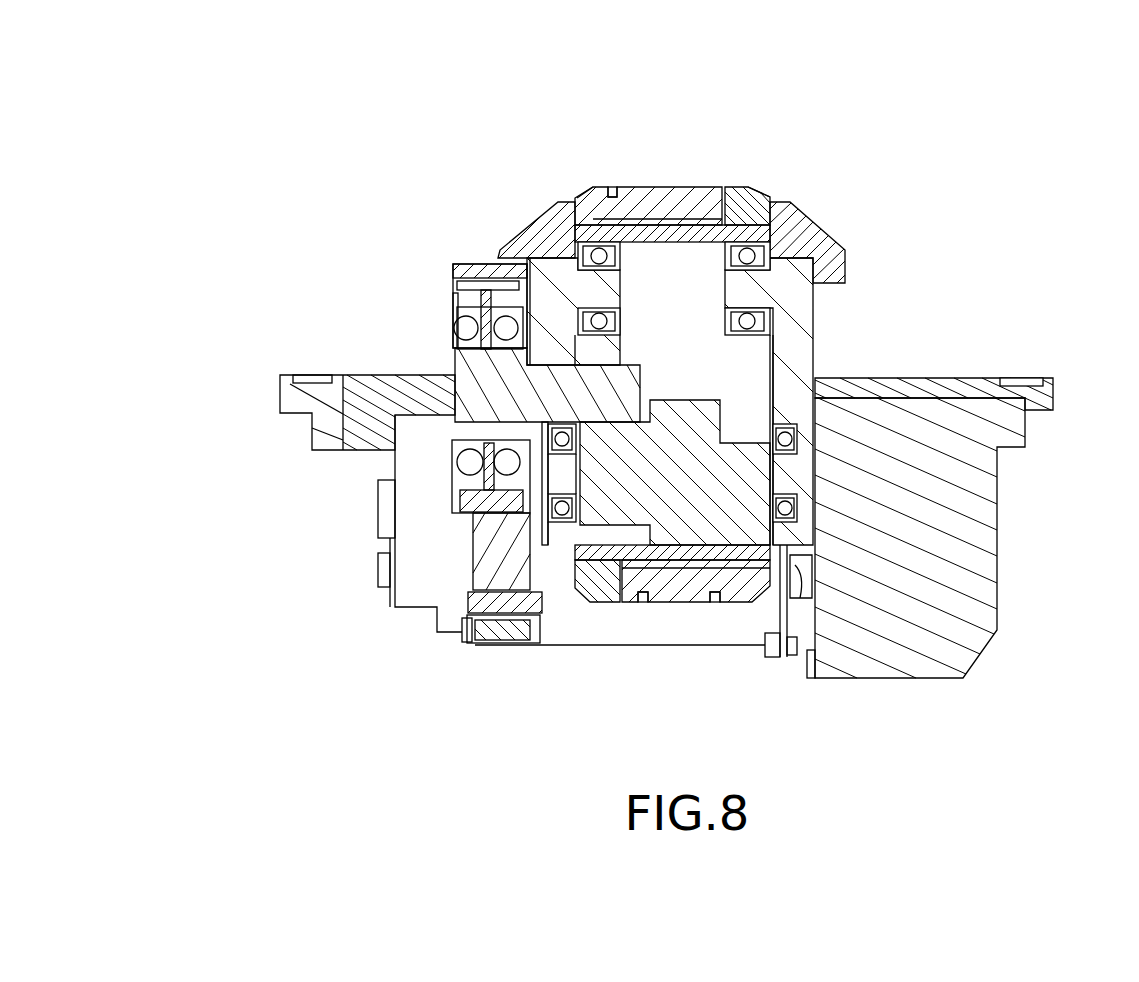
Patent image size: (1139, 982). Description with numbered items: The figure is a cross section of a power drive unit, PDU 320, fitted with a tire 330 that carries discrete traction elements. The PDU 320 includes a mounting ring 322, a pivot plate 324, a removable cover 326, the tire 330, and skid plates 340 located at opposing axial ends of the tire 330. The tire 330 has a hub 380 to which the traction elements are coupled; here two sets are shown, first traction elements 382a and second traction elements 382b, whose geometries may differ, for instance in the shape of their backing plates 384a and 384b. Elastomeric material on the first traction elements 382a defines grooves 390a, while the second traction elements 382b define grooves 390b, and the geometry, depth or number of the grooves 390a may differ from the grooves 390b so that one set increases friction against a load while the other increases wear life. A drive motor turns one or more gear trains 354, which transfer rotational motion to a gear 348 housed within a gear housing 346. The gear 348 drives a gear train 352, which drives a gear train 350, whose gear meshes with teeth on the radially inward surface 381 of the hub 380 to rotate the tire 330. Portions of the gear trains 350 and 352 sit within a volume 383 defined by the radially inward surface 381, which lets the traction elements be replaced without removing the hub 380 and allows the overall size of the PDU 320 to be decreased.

The PDU 320 is at (282, 176).
The mounting ring 322 is at (964, 498).
The pivot plate 324 is at (1010, 378).
The removable cover 326 is at (906, 378).
The tire 330 is at (677, 122).
The skid plates 340 is at (532, 234).
The gear housing 346 is at (455, 302).
The gear 348 is at (470, 282).
The gear train 350 is at (672, 472).
The gear train 352 is at (547, 385).
The gear trains 354 is at (426, 572).
The hub 380 is at (665, 242).
The radially inward surface 381 is at (674, 297).
The first traction elements 382a is at (637, 187).
The second traction elements 382b is at (748, 195).
The volume 383 is at (752, 377).
The backing plates 384a is at (579, 198).
The backing plates 384b is at (766, 200).
The grooves 390a is at (609, 172).
The grooves 390b is at (644, 617).